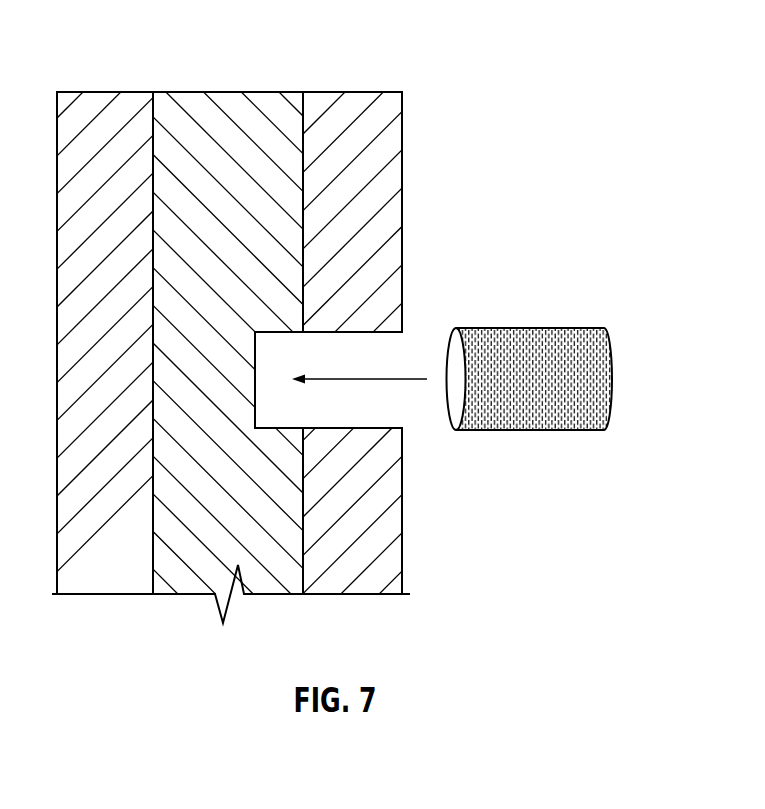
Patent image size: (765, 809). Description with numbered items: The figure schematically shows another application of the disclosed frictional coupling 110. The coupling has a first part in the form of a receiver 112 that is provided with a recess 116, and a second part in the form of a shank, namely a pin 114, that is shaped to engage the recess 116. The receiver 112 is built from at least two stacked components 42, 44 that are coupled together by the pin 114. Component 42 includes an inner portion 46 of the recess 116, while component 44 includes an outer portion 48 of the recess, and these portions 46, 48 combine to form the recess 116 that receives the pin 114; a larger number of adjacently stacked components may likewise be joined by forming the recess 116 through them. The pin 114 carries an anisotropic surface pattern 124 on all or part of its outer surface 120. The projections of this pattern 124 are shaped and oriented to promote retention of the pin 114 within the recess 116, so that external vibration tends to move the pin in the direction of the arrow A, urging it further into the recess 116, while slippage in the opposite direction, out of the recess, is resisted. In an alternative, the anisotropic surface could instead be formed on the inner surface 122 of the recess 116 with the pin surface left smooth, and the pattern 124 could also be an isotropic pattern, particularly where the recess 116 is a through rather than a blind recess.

The component 42 is at (262, 91).
The component 44 is at (360, 91).
The inner portion of the recess 46 is at (282, 428).
The outer portion of the recess 48 is at (313, 333).
The receiver 112 is at (413, 133).
The recess 116 is at (370, 333).
The inner surface of the recess 122 is at (323, 333).
The arrow A is at (404, 380).
The frictional coupling 110 is at (460, 447).
The pin 114 is at (549, 318).
The outer surface 120 is at (608, 333).
The anisotropic surface pattern 124 is at (565, 432).